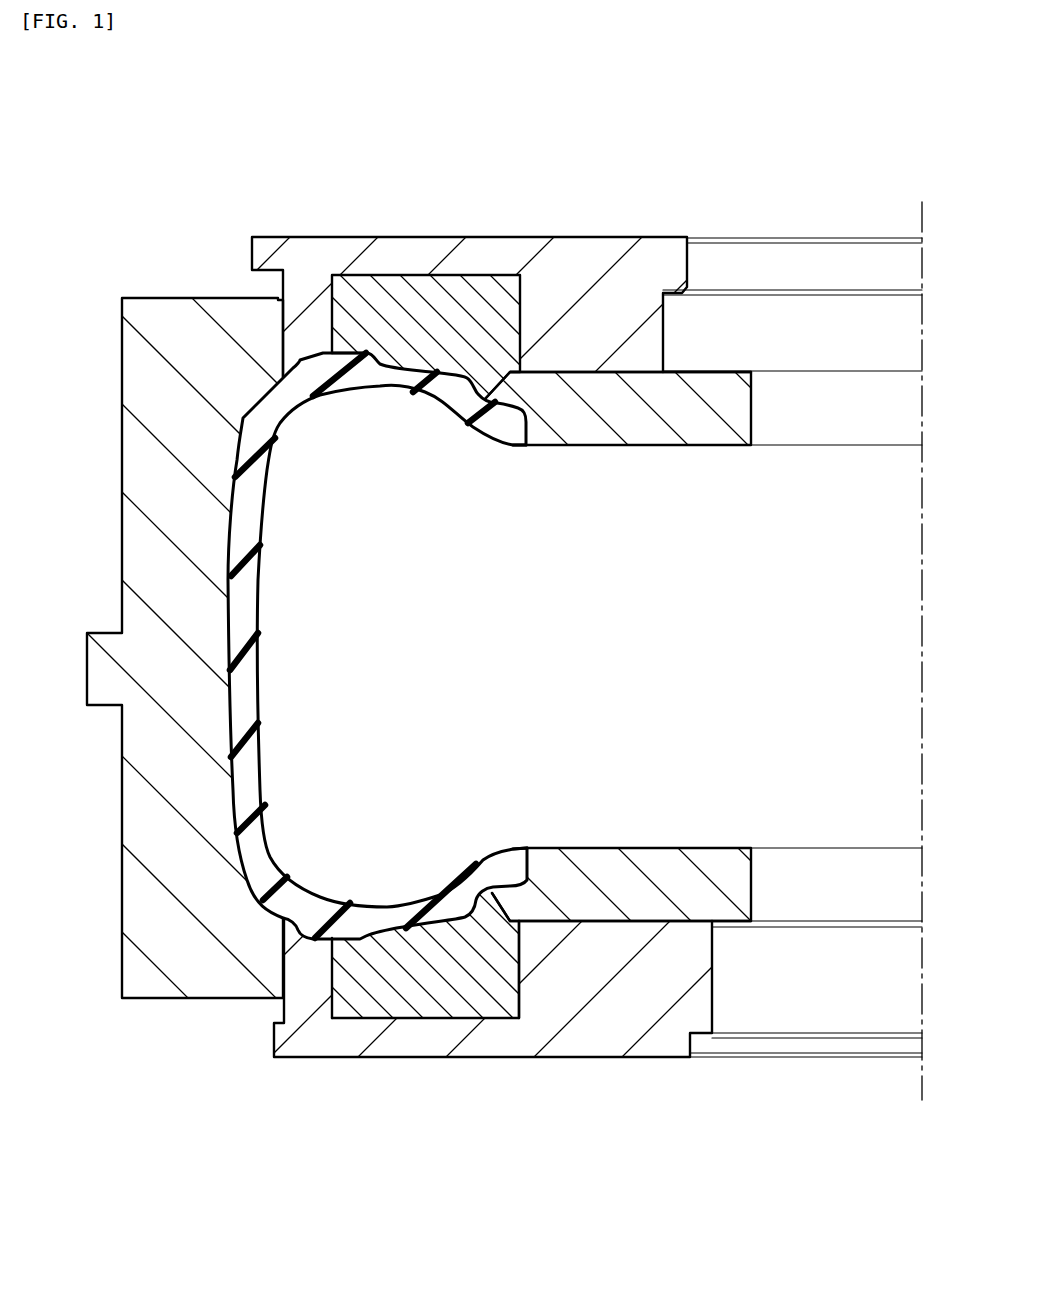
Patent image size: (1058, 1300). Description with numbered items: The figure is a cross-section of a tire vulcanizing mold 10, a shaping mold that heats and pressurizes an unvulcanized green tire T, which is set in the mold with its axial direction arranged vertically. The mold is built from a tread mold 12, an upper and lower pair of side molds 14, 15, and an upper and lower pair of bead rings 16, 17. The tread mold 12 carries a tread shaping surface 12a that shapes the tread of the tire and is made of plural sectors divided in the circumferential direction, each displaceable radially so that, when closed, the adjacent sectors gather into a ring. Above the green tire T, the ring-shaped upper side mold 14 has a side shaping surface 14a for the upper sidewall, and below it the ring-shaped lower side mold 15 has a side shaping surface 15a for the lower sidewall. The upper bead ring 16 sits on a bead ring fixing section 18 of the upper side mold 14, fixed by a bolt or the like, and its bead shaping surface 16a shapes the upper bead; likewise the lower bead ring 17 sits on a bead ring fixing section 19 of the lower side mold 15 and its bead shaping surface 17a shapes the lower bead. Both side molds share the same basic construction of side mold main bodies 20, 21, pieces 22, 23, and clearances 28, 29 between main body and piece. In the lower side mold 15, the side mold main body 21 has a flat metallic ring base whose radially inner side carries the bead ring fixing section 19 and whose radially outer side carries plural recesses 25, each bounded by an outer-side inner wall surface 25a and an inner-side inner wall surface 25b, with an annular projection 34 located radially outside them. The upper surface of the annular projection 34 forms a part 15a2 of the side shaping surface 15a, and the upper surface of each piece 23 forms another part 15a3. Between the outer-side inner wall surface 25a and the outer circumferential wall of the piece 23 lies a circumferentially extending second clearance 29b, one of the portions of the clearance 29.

The tire vulcanizing mold 10 is at (658, 63).
The tread mold 12 is at (145, 567).
The tread shaping surface 12a is at (240, 570).
The upper side mold 14 is at (529, 483).
The side shaping surface 14a is at (394, 368).
The lower side mold 15 is at (529, 740).
The side shaping surface 15a is at (255, 851).
The part of the side shaping surface 15a2 is at (247, 877).
The part of the side shaping surface 15a3 is at (436, 880).
The upper bead ring 16 is at (696, 437).
The bead shaping surface 16a is at (520, 412).
The lower bead ring 17 is at (685, 862).
The bead shaping surface 17a is at (516, 862).
The bead ring fixing section 18 is at (606, 372).
The bead ring fixing section 19 is at (613, 920).
The side mold main body 20 is at (470, 255).
The side mold main body 21 is at (437, 1040).
The piece 22 is at (428, 315).
The piece 23 is at (500, 972).
The recess 25 is at (386, 283).
The outer-side inner wall surface 25a is at (343, 972).
The inner-side inner wall surface 25b is at (515, 943).
The clearance 28 is at (330, 378).
The clearance 29 is at (330, 880).
The second clearance 29b is at (333, 938).
The annular projection 34 is at (303, 337).
The green tire T is at (289, 646).